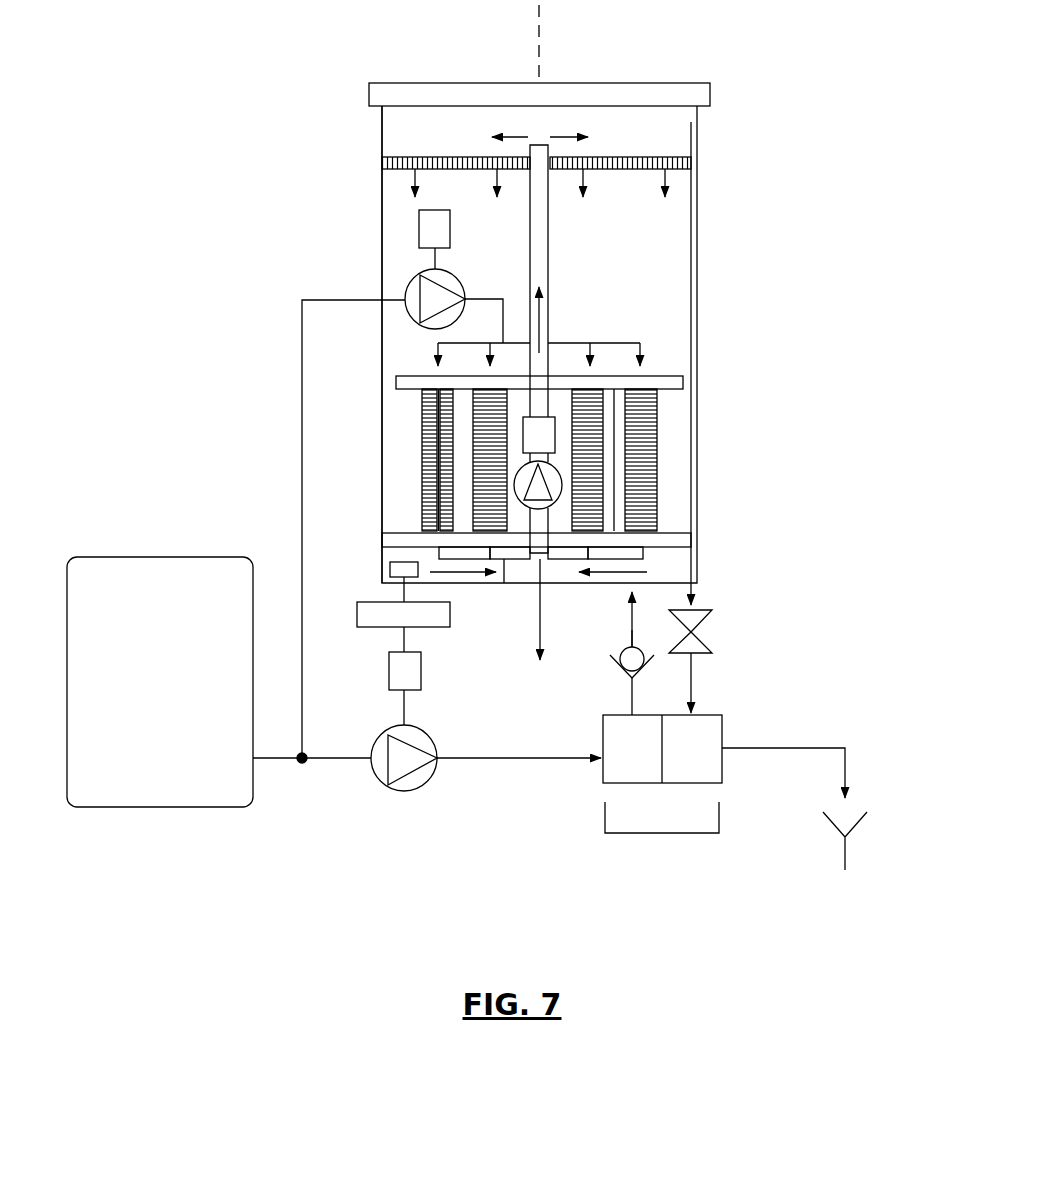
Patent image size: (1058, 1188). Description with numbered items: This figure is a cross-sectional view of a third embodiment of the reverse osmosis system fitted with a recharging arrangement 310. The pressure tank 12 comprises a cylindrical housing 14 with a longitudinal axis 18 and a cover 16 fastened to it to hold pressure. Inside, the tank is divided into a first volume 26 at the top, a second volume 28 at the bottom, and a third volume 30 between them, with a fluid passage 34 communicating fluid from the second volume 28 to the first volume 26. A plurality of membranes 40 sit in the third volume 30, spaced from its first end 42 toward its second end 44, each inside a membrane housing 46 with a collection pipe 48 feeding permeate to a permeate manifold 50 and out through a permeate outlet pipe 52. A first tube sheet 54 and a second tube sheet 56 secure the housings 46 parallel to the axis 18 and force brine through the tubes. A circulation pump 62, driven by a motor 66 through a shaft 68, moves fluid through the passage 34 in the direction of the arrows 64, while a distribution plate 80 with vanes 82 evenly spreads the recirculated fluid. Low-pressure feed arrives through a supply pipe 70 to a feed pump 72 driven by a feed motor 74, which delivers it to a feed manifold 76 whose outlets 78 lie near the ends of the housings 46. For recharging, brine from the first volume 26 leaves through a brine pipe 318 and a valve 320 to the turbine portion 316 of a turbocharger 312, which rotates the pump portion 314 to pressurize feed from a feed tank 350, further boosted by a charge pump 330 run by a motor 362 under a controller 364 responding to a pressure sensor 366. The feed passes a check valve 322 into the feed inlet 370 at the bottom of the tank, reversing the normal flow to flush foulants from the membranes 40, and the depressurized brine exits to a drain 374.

The pressure tank 12 is at (370, 112).
The housing 14 is at (382, 187).
The cover 16 is at (395, 93).
The longitudinal axis 18 is at (539, 20).
The first volume 26 is at (611, 131).
The second volume 28 is at (381, 578).
The third volume 30 is at (675, 233).
The fluid passage 34 is at (548, 250).
The membranes 40 is at (427, 415).
The first end 42 is at (677, 198).
The second end 44 is at (670, 517).
The membrane housing 46 is at (657, 413).
The collection pipe 48 is at (440, 438).
The permeate manifold 50 is at (505, 583).
The permeate outlet pipe 52 is at (537, 630).
The first tube sheet 54 is at (683, 382).
The second tube sheet 56 is at (677, 540).
The circulation pump 62 is at (552, 458).
The arrows 64 is at (513, 135).
The motor 66 is at (523, 420).
The shaft 68 is at (522, 458).
The low-pressure supply pipe 70 is at (335, 300).
The feed pump 72 is at (460, 277).
The feed motor 74 is at (419, 220).
The feed manifold 76 is at (503, 298).
The feed manifold outlets 78 is at (490, 350).
The distribution plate 80 is at (443, 160).
The vanes 82 is at (483, 167).
The recharging arrangement 310 is at (390, 807).
The turbocharger 312 is at (647, 833).
The pump portion 314 is at (603, 740).
The turbine portion 316 is at (722, 728).
The brine pipe 318 is at (691, 293).
The valve 320 is at (712, 620).
The check valve 322 is at (645, 652).
The charge pump 330 is at (425, 785).
The feed tank 350 is at (162, 807).
The motor 362 is at (422, 675).
The controller 364 is at (363, 627).
The pressure sensor 366 is at (390, 563).
The feed inlet 370 is at (632, 638).
The drain 374 is at (827, 822).